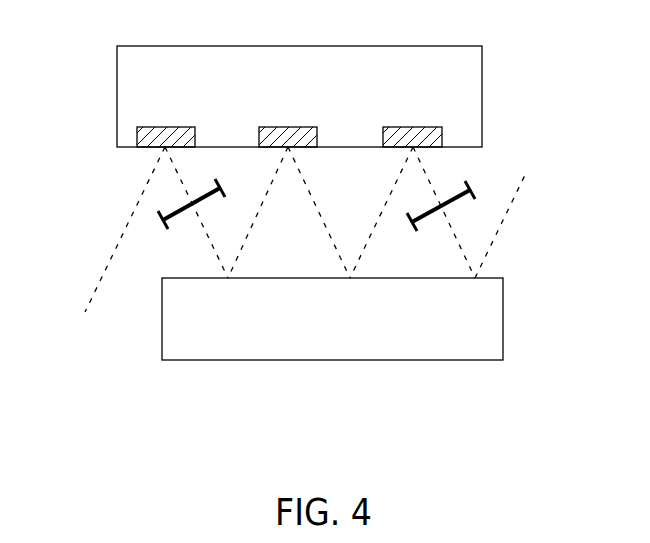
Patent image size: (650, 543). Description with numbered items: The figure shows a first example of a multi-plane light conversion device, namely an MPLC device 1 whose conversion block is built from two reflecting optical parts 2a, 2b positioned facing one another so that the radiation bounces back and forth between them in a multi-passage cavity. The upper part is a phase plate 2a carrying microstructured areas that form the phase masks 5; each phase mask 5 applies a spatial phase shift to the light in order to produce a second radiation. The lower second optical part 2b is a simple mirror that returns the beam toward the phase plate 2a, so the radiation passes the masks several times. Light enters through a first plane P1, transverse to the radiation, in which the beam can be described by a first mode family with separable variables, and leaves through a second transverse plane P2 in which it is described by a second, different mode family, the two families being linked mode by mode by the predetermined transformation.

The MPLC device 1 is at (93, 387).
The phase plate 2a is at (483, 67).
The second optical part 2b is at (503, 327).
The phase masks 5 is at (147, 128).
The first plane P1 is at (173, 207).
The second transverse plane P2 is at (453, 205).